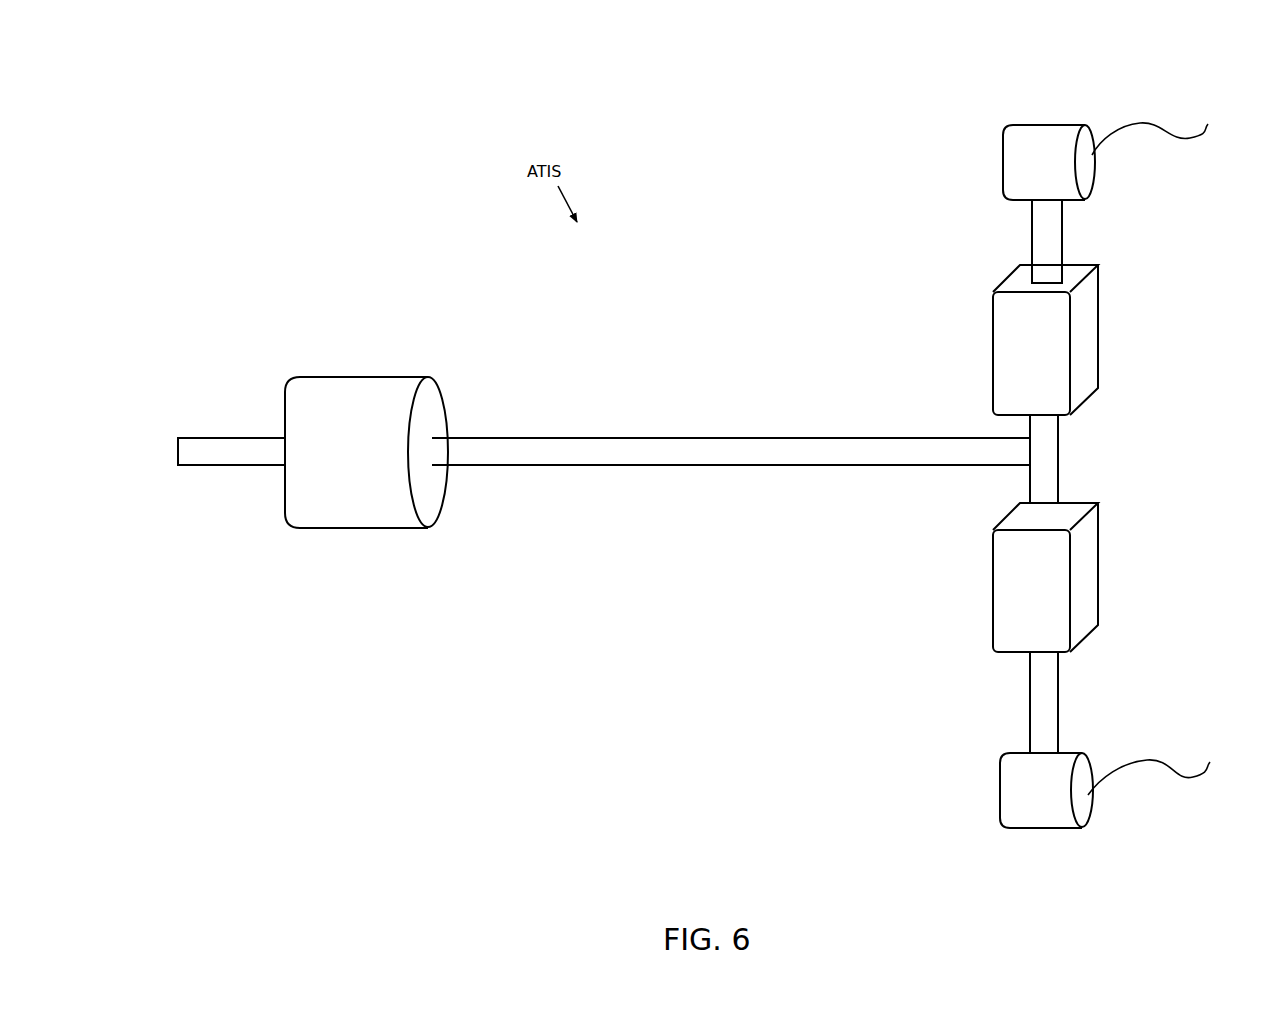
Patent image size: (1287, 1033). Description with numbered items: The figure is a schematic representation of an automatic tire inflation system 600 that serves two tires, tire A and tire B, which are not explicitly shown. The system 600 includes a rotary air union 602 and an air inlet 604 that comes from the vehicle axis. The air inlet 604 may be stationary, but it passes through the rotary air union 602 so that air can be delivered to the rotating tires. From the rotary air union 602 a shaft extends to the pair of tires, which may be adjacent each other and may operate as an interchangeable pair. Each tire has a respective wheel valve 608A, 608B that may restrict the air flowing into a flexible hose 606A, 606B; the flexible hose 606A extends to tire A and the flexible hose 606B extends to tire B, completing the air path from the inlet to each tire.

The automatic tire inflation system 600 is at (273, 87).
The rotary air union 602 is at (334, 382).
The air inlet 604 is at (178, 450).
The flexible hose 606A is at (1093, 157).
The flexible hose 606B is at (1087, 800).
The wheel valve 608A is at (1085, 318).
The wheel valve 608B is at (1078, 592).